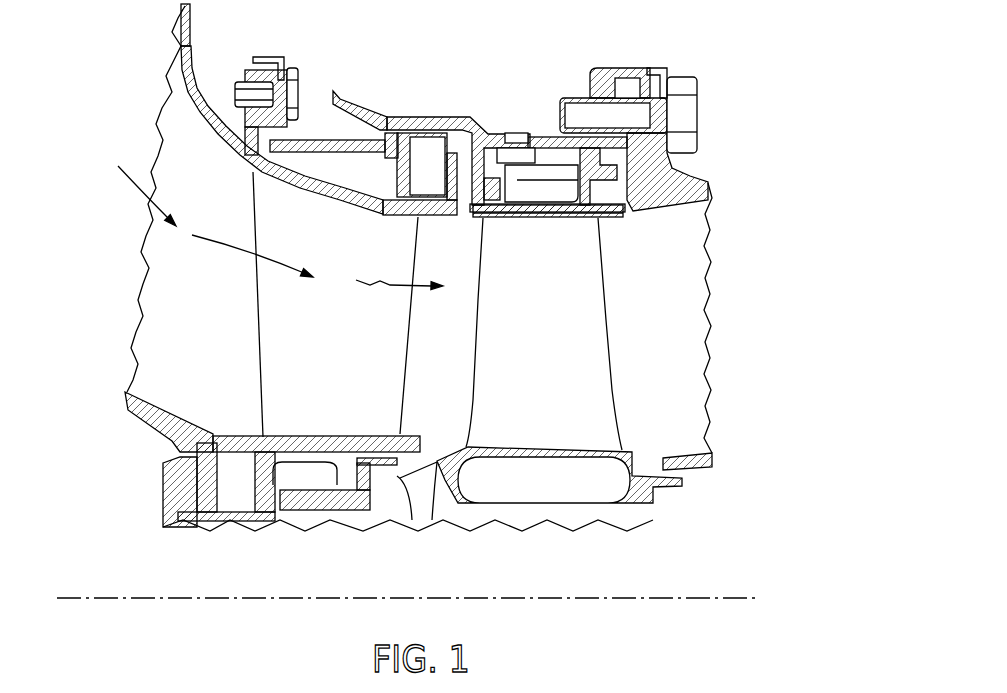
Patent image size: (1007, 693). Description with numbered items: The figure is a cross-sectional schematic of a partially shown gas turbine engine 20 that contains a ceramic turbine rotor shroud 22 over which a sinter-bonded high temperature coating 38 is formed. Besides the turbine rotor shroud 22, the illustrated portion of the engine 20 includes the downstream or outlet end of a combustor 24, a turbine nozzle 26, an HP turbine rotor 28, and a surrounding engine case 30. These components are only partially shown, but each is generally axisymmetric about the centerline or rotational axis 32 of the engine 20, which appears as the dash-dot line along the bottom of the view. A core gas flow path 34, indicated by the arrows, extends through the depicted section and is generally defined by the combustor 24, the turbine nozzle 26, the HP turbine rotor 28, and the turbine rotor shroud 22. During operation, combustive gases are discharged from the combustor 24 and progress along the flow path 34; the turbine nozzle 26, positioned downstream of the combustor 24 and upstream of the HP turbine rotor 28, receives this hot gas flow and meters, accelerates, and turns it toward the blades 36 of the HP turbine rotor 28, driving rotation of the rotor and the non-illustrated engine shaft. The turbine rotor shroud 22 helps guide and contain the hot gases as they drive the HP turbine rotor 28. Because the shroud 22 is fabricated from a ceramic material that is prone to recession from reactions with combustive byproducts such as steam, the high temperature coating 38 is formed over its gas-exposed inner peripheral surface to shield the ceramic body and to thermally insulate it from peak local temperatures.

The gas turbine engine 20 is at (408, 301).
The ceramic turbine rotor shroud 22 is at (547, 263).
The combustor 24 is at (235, 228).
The turbine nozzle 26 is at (342, 312).
The HP turbine rotor 28 is at (574, 519).
The engine case 30 is at (431, 134).
The rotational axis 32 is at (408, 570).
The core gas flow path 34 is at (263, 228).
The blades 36 is at (563, 334).
The high temperature coating 38 is at (469, 204).